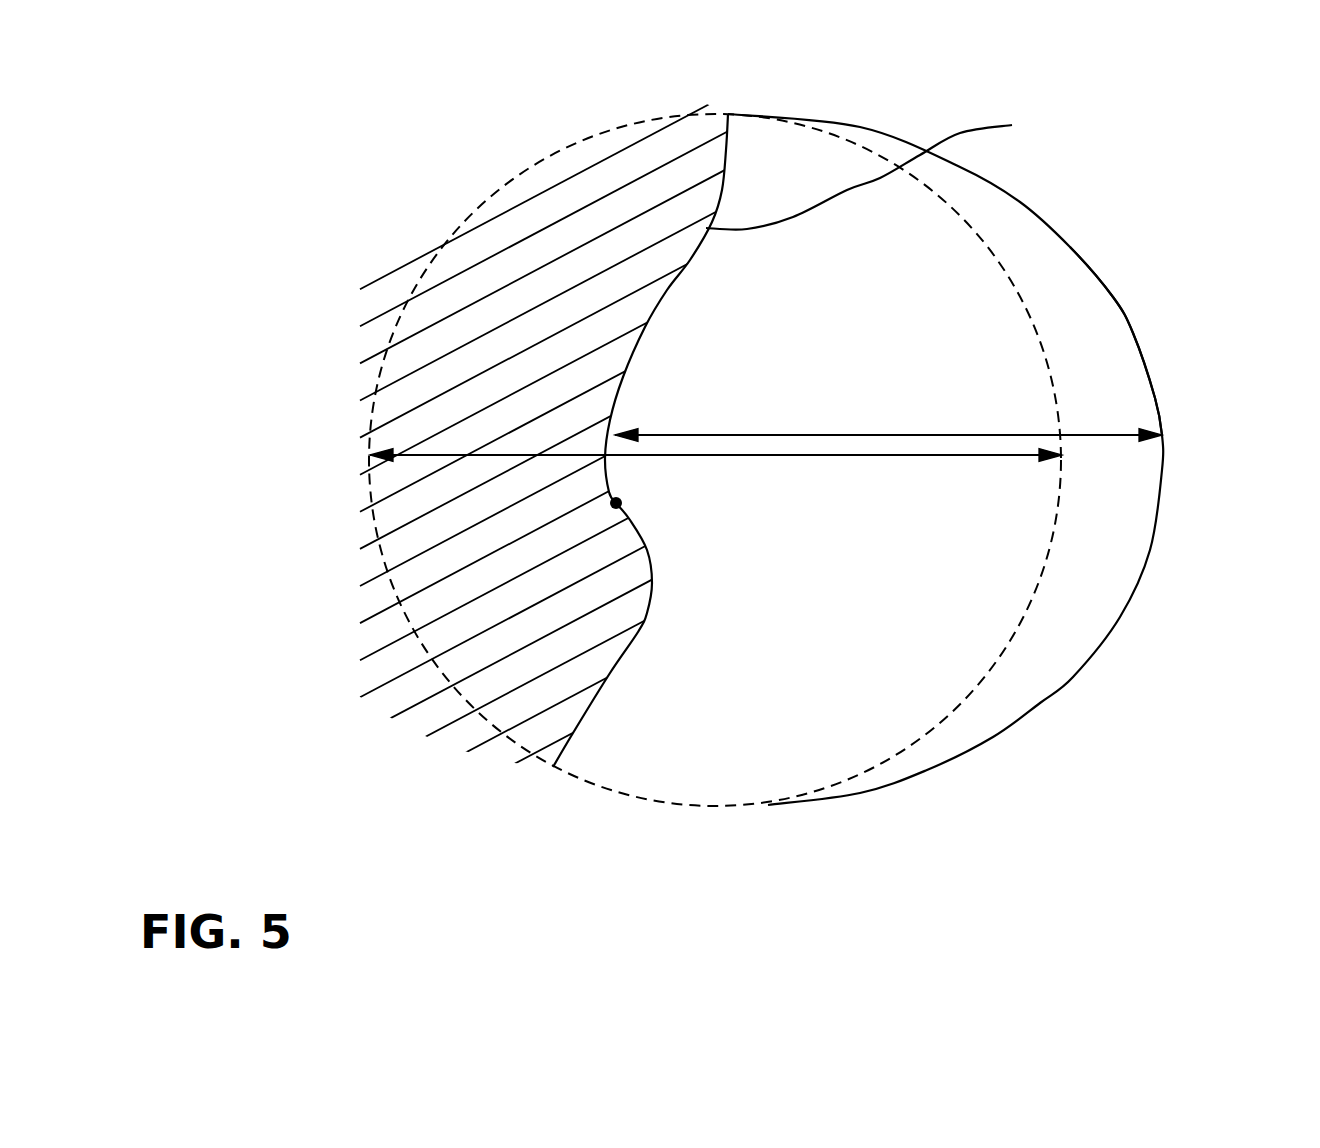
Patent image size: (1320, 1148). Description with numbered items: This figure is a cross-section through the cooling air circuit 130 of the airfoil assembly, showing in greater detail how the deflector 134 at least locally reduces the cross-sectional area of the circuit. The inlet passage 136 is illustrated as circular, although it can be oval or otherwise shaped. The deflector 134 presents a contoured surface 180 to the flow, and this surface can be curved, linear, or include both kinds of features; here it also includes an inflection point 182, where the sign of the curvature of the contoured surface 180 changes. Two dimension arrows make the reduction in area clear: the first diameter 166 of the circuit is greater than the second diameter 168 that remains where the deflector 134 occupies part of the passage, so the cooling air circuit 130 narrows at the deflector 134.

The cooling air circuit 130 is at (1028, 196).
The deflector 134 is at (745, 172).
The inlet passage 136 is at (1133, 333).
The first diameter 166 is at (945, 457).
The second diameter 168 is at (903, 435).
The contoured surface 180 is at (883, 172).
The inflection point 182 is at (616, 503).